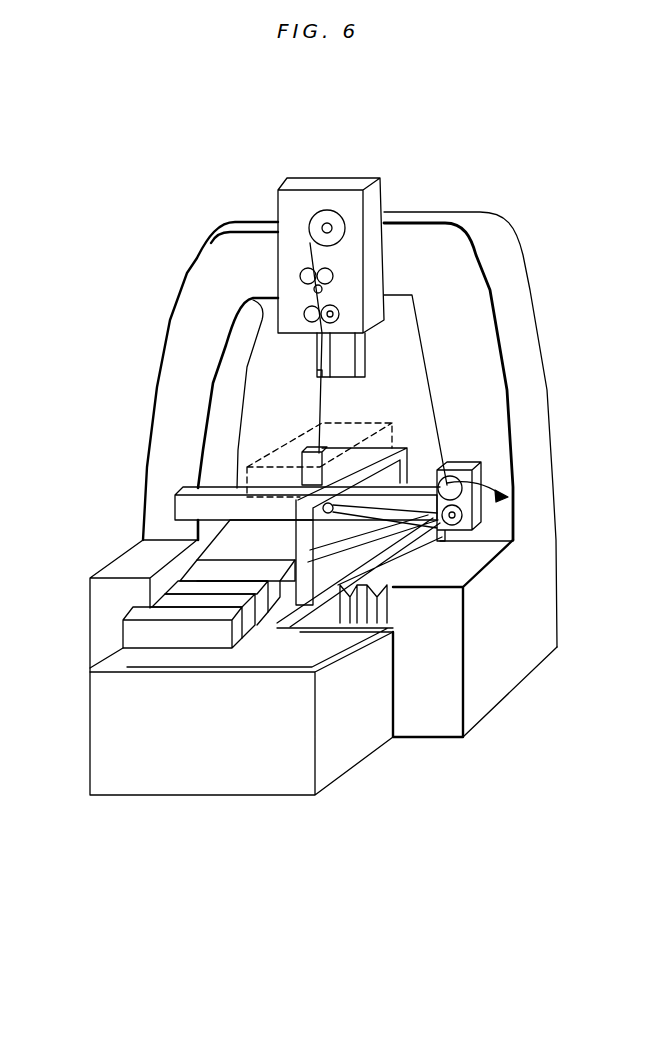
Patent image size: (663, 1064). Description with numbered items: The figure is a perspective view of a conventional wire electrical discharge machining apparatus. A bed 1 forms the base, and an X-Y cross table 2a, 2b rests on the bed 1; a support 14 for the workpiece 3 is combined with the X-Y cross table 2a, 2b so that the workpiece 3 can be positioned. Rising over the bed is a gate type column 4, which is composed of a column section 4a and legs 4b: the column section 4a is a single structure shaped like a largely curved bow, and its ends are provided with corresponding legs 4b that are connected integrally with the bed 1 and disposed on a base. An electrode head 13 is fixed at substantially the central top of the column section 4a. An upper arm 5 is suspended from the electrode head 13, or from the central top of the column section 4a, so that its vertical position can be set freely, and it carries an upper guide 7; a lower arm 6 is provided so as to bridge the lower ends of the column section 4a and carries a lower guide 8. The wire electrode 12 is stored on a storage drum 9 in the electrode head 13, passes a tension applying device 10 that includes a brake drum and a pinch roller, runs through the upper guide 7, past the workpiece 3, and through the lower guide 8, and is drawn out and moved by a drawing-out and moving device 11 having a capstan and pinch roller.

The bed 1 is at (353, 757).
The X-Y cross table 2a is at (333, 610).
The X-Y cross table 2b is at (305, 588).
The workpiece 3 is at (273, 457).
The gate type column 4 is at (584, 242).
The gate type column section 4a is at (484, 346).
The legs 4b is at (102, 618).
The upper arm 5 is at (348, 358).
The lower arm 6 is at (220, 493).
The upper guide 7 is at (315, 372).
The lower guide 8 is at (330, 512).
The storage drum 9 is at (328, 220).
The tension applying device 10 is at (336, 313).
The drawing-out and moving device 11 is at (482, 488).
The wire electrode 12 is at (321, 405).
The electrode head 13 is at (292, 195).
The support 14 is at (396, 450).